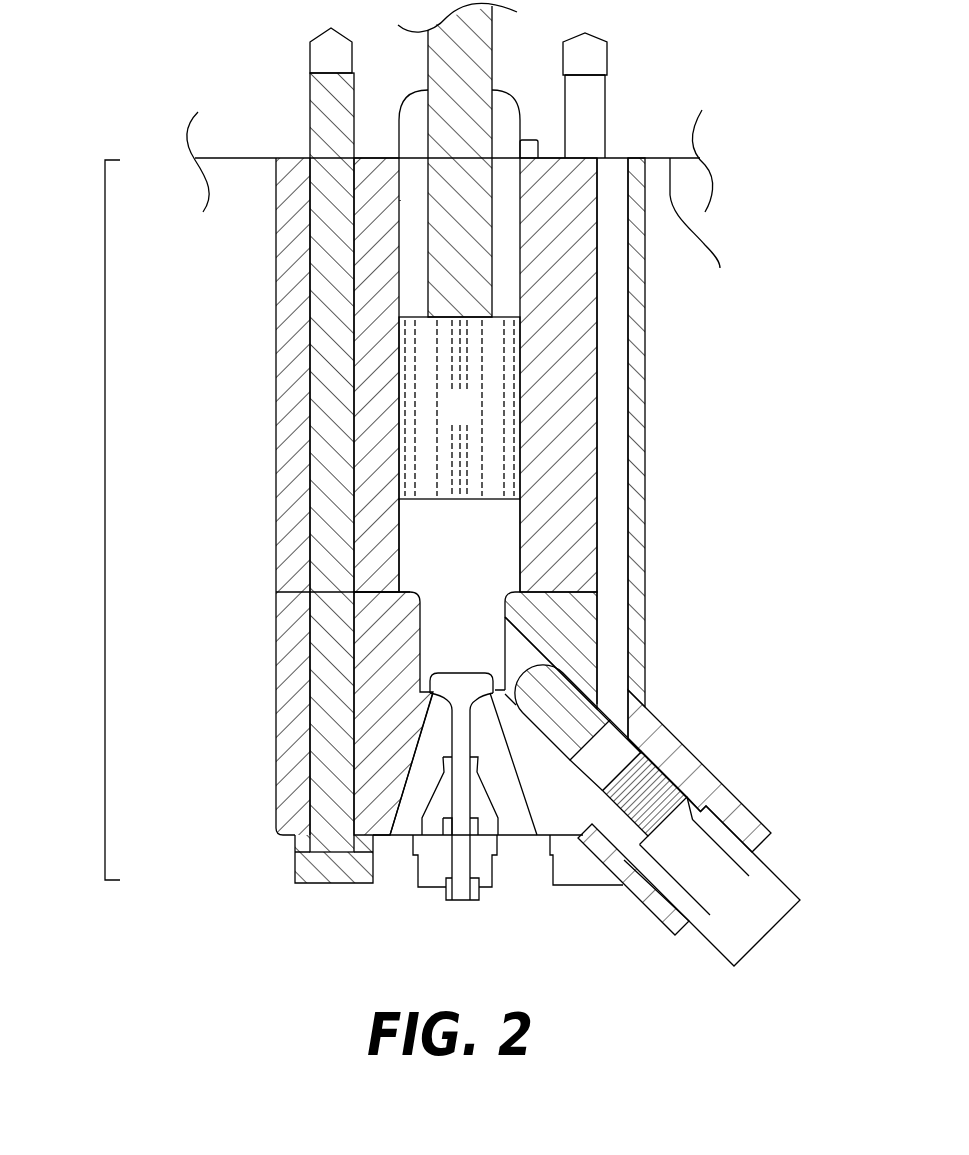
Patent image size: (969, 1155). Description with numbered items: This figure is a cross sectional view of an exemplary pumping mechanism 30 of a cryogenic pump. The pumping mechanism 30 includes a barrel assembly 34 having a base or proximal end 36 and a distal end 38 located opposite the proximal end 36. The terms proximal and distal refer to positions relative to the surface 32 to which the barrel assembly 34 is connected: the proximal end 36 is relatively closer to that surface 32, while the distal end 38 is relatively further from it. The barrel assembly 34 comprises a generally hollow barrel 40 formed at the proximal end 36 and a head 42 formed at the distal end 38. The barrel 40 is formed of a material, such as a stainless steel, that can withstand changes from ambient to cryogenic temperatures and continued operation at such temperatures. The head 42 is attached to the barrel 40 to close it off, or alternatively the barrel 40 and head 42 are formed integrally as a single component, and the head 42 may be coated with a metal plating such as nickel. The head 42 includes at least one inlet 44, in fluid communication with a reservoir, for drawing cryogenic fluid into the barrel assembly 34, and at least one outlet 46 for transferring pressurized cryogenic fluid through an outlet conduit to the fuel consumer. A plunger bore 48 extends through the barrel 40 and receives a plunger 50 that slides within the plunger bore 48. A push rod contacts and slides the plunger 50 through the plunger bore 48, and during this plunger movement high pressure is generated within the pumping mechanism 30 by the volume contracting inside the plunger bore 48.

The pumping mechanism 30 is at (851, 156).
The surface 32 is at (566, 160).
The barrel assembly 34 is at (105, 548).
The proximal end 36 is at (228, 229).
The distal end 38 is at (248, 869).
The barrel 40 is at (569, 342).
The head 42 is at (396, 657).
The inlet 44 is at (397, 845).
The outlet 46 is at (513, 661).
The plunger bore 48 is at (464, 566).
The plunger 50 is at (474, 422).